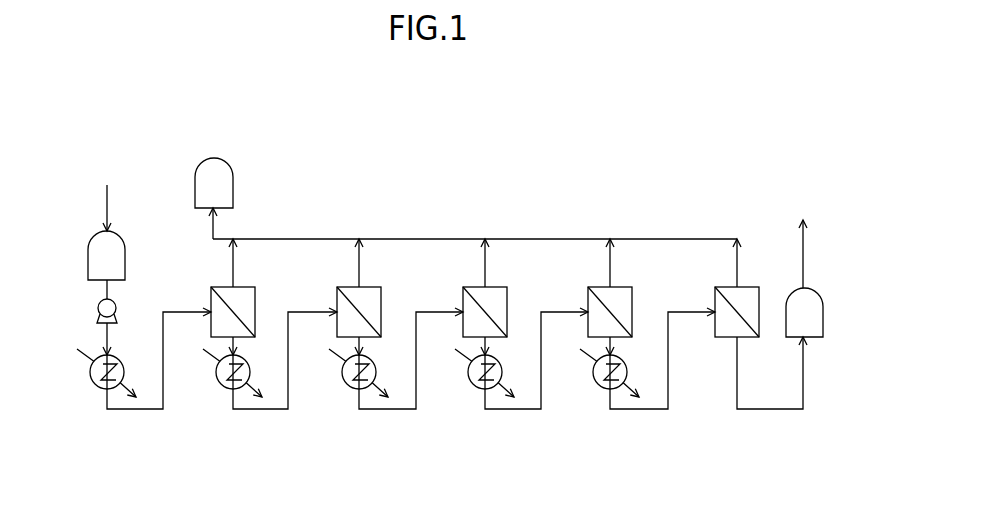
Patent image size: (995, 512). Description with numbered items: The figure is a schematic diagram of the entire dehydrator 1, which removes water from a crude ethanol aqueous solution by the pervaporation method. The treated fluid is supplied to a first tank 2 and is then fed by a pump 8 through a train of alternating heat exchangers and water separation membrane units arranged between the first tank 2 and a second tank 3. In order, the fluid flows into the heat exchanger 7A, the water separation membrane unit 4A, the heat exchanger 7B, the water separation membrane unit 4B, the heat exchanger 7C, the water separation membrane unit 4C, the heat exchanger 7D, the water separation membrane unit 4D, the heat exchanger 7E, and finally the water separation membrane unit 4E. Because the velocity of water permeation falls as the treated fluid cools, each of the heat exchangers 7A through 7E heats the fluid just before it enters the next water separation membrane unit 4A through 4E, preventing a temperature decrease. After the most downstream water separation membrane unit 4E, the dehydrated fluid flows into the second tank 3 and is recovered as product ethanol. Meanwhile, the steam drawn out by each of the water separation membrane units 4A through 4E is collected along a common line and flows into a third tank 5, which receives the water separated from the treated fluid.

The dehydrator 1 is at (507, 183).
The first tank 2 is at (123, 236).
The second tank 3 is at (786, 313).
The water separation membrane unit 4A is at (247, 287).
The water separation membrane unit 4B is at (371, 287).
The water separation membrane unit 4C is at (497, 287).
The water separation membrane unit 4D is at (624, 287).
The water separation membrane unit 4E is at (748, 287).
The third tank 5 is at (228, 162).
The heat exchanger 7A is at (96, 387).
The heat exchanger 7B is at (221, 386).
The heat exchanger 7C is at (347, 386).
The heat exchanger 7D is at (473, 386).
The heat exchanger 7E is at (598, 386).
The pump 8 is at (118, 310).